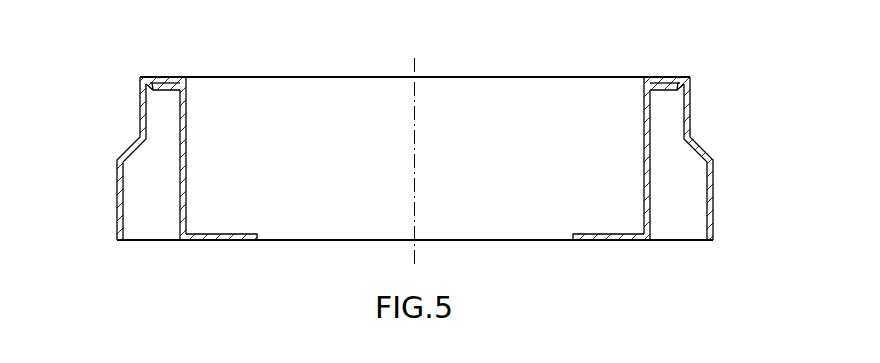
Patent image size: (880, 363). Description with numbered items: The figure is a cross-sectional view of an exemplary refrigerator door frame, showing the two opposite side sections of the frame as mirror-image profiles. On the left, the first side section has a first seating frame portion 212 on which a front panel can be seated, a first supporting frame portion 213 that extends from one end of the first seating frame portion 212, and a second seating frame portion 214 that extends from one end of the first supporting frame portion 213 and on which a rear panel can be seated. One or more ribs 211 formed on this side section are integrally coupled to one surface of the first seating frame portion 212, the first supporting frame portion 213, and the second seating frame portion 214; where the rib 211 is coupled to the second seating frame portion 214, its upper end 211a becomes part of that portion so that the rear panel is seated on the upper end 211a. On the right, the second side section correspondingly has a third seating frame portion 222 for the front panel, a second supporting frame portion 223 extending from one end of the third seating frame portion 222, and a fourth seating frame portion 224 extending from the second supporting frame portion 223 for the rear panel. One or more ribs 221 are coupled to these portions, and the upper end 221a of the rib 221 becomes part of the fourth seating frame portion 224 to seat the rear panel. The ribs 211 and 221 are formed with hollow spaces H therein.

The ribs 211 is at (186, 165).
The upper end of the rib 211a is at (201, 54).
The first seating frame portion 212 is at (213, 241).
The first supporting frame portion 213 is at (127, 147).
The second seating frame portion 214 is at (172, 82).
The ribs 221 is at (644, 167).
The upper end of the rib 221a is at (696, 54).
The third seating frame portion 222 is at (615, 241).
The second supporting frame portion 223 is at (703, 147).
The fourth seating frame portion 224 is at (658, 82).
The hollow spaces H is at (166, 205).